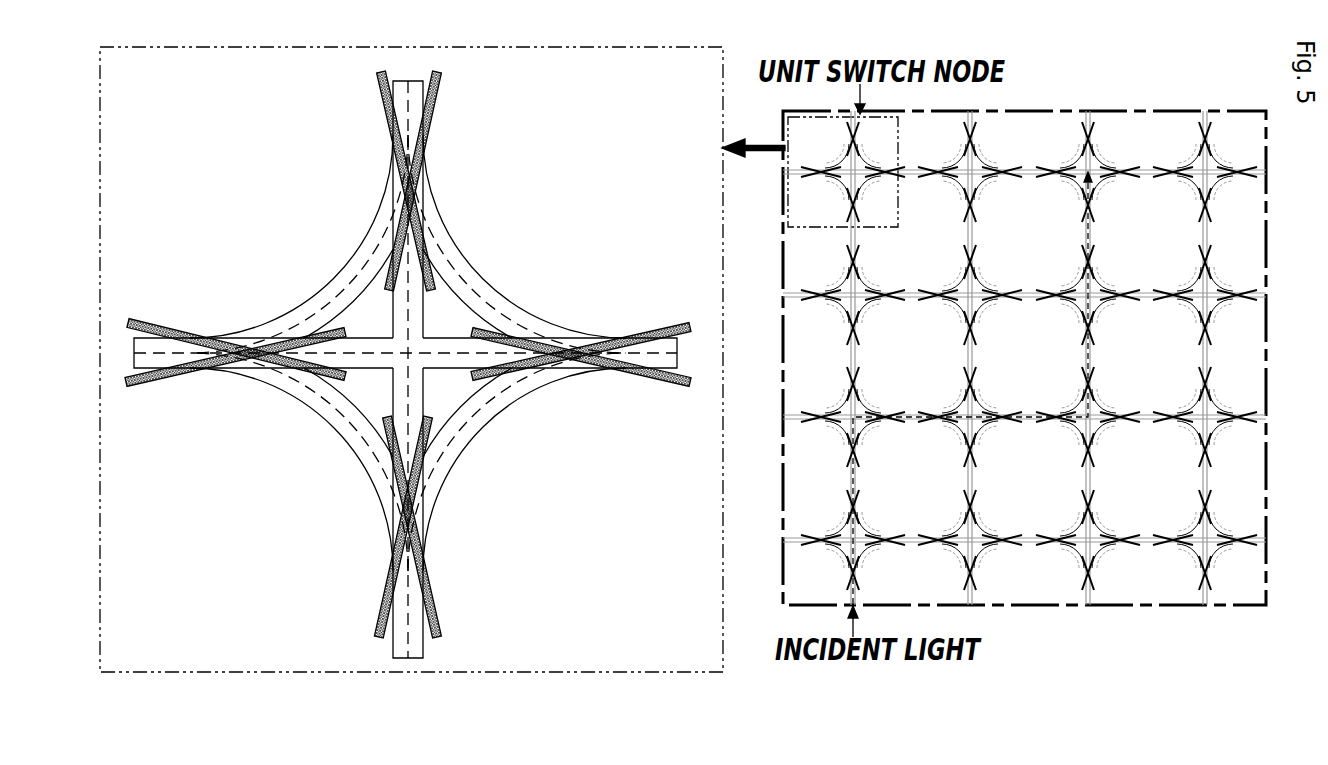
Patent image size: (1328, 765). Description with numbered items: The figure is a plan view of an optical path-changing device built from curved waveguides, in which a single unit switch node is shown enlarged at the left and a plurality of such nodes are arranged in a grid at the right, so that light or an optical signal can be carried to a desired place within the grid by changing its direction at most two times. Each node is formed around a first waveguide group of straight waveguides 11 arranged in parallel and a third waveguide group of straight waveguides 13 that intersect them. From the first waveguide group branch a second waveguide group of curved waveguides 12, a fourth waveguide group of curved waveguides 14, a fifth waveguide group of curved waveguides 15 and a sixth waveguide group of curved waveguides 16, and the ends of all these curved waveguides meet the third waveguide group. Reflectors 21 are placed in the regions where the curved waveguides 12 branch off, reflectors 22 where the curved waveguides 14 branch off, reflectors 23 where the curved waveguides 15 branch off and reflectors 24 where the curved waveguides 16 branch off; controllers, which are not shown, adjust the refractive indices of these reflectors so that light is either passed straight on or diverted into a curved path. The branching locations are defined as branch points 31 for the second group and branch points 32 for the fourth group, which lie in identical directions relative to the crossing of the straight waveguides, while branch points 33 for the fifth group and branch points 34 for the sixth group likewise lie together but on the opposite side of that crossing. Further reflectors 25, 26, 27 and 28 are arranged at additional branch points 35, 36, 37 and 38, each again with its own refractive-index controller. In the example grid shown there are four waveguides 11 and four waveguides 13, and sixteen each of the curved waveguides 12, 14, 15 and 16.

The waveguide 11 is at (393, 647).
The curved waveguide 12 is at (500, 397).
The waveguide 13 is at (140, 347).
The curved waveguide 14 is at (322, 400).
The curved waveguide 15 is at (500, 310).
The curved waveguide 16 is at (338, 292).
The reflector 21 is at (392, 568).
The reflector 22 is at (428, 568).
The reflector 23 is at (393, 142).
The reflector 24 is at (423, 142).
The reflector 25 is at (620, 330).
The reflector 26 is at (593, 372).
The reflector 27 is at (203, 340).
The reflector 28 is at (212, 372).
The branch point 31 is at (423, 530).
The branch point 32 is at (423, 530).
The branch point 33 is at (404, 170).
The branch point 34 is at (404, 170).
The branch point 35 is at (590, 345).
The branch point 36 is at (590, 345).
The branch point 37 is at (227, 347).
The branch point 38 is at (227, 347).